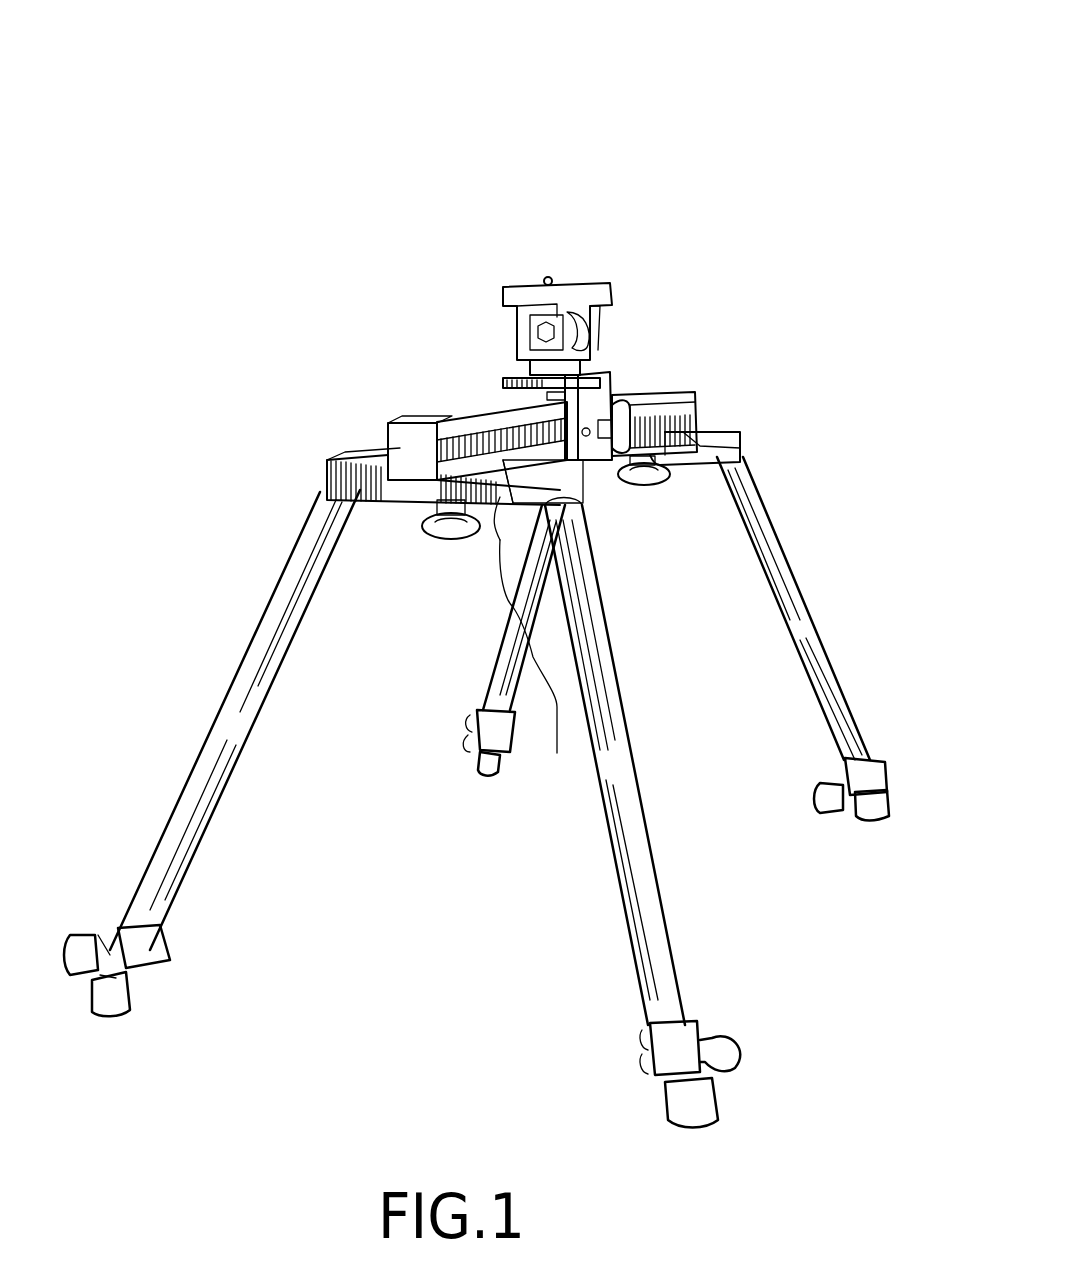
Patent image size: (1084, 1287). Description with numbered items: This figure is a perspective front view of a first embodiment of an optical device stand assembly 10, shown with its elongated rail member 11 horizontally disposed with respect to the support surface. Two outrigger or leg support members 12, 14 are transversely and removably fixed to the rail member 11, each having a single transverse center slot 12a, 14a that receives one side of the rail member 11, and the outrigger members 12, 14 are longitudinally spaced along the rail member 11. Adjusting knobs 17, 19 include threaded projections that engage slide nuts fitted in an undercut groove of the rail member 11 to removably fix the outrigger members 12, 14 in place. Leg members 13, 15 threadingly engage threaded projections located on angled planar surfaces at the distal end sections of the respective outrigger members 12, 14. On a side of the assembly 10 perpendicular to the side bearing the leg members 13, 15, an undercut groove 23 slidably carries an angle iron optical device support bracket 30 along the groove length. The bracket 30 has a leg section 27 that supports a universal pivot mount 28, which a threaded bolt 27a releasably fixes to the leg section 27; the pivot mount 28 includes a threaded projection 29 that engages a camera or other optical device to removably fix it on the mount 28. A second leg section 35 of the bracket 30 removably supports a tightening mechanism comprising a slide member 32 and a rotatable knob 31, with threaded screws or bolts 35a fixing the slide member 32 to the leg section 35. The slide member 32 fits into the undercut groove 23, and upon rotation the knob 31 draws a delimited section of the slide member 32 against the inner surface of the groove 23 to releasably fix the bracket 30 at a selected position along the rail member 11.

The optical device stand assembly 10 is at (650, 185).
The elongated rail member 11 is at (664, 393).
The outrigger or leg support member 12 is at (712, 432).
The transverse center slot 12a is at (743, 432).
The leg member 13 is at (837, 683).
The outrigger or leg support member 14 is at (572, 565).
The transverse center slot 14a is at (557, 753).
The leg member 15 is at (626, 722).
The adjusting knob 17 is at (657, 483).
The adjusting knob 19 is at (453, 540).
The undercut groove 23 is at (460, 480).
The leg section 27 is at (503, 381).
The threaded bolt 27a is at (617, 376).
The universal pivot mount 28 is at (503, 333).
The threaded projection 29 is at (545, 272).
The optical device support bracket 30 is at (590, 425).
The rotatable knob 31 is at (700, 400).
The slide member 32 is at (560, 432).
The leg section 35 is at (590, 457).
The threaded screws or bolts 35a is at (632, 402).